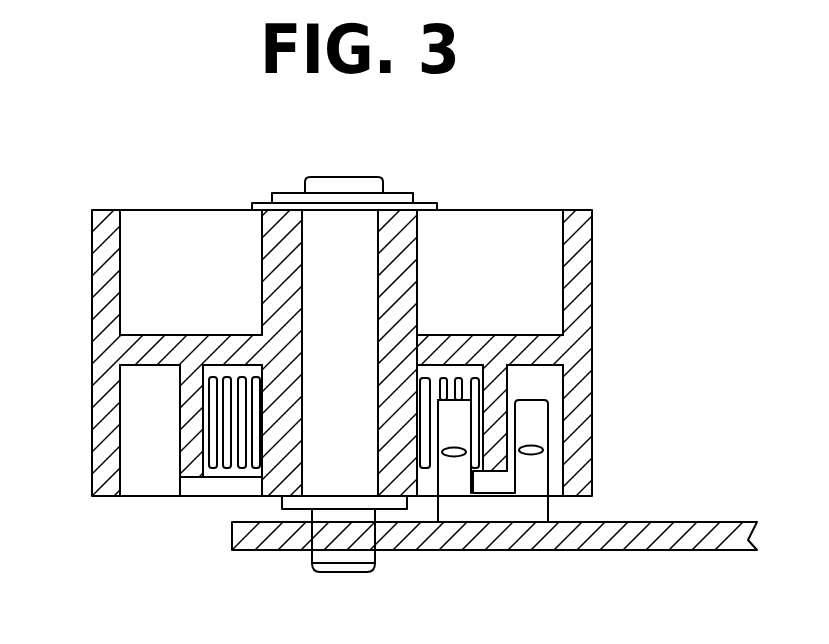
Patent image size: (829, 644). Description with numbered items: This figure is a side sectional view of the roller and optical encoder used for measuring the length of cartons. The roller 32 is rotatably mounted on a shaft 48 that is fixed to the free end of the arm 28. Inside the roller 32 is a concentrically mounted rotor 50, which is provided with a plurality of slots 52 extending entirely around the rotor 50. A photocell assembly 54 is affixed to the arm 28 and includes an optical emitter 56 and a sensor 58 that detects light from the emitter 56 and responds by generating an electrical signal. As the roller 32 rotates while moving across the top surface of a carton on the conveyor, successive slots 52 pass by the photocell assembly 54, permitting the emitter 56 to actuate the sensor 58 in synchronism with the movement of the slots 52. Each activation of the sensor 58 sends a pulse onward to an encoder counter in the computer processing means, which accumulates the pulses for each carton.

The arm 28 is at (707, 522).
The roller 32 is at (593, 317).
The shaft 48 is at (350, 177).
The rotor 50 is at (178, 443).
The slots 52 is at (222, 373).
The photocell assembly 54 is at (518, 508).
The optical emitter 56 is at (543, 455).
The sensor 58 is at (457, 457).